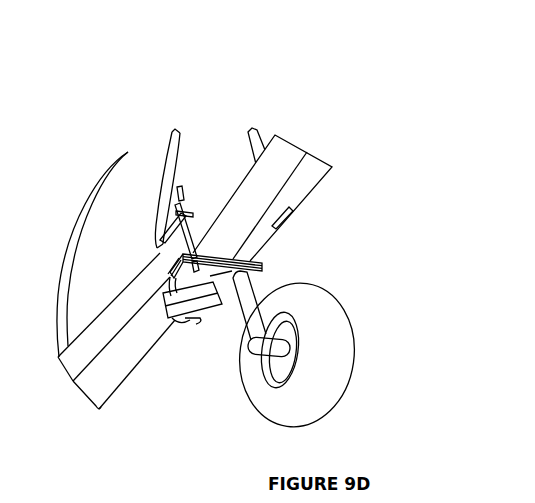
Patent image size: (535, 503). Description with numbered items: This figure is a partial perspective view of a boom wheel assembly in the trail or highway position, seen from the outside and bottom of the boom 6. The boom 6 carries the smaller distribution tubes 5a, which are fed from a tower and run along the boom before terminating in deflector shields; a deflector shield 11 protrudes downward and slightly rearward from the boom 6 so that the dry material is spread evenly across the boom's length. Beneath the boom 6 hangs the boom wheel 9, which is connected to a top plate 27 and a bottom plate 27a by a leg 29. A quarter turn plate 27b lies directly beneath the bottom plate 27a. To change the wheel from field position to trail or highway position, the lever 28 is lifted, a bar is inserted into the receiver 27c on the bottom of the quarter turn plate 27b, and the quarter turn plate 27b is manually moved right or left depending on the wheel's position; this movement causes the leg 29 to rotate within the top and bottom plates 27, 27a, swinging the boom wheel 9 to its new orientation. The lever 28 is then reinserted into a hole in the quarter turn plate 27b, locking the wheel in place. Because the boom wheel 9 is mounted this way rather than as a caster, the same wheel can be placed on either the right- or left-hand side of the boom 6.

The smaller distribution tubes 5a is at (250, 131).
The boom 6 is at (290, 153).
The boom wheel 9 is at (300, 300).
The deflector shield 11 is at (292, 213).
The top plate 27 is at (163, 231).
The bottom plate 27a is at (172, 274).
The quarter turn plate 27b is at (246, 258).
The receiver 27c is at (192, 297).
The lever 28 is at (178, 187).
The leg 29 is at (251, 316).